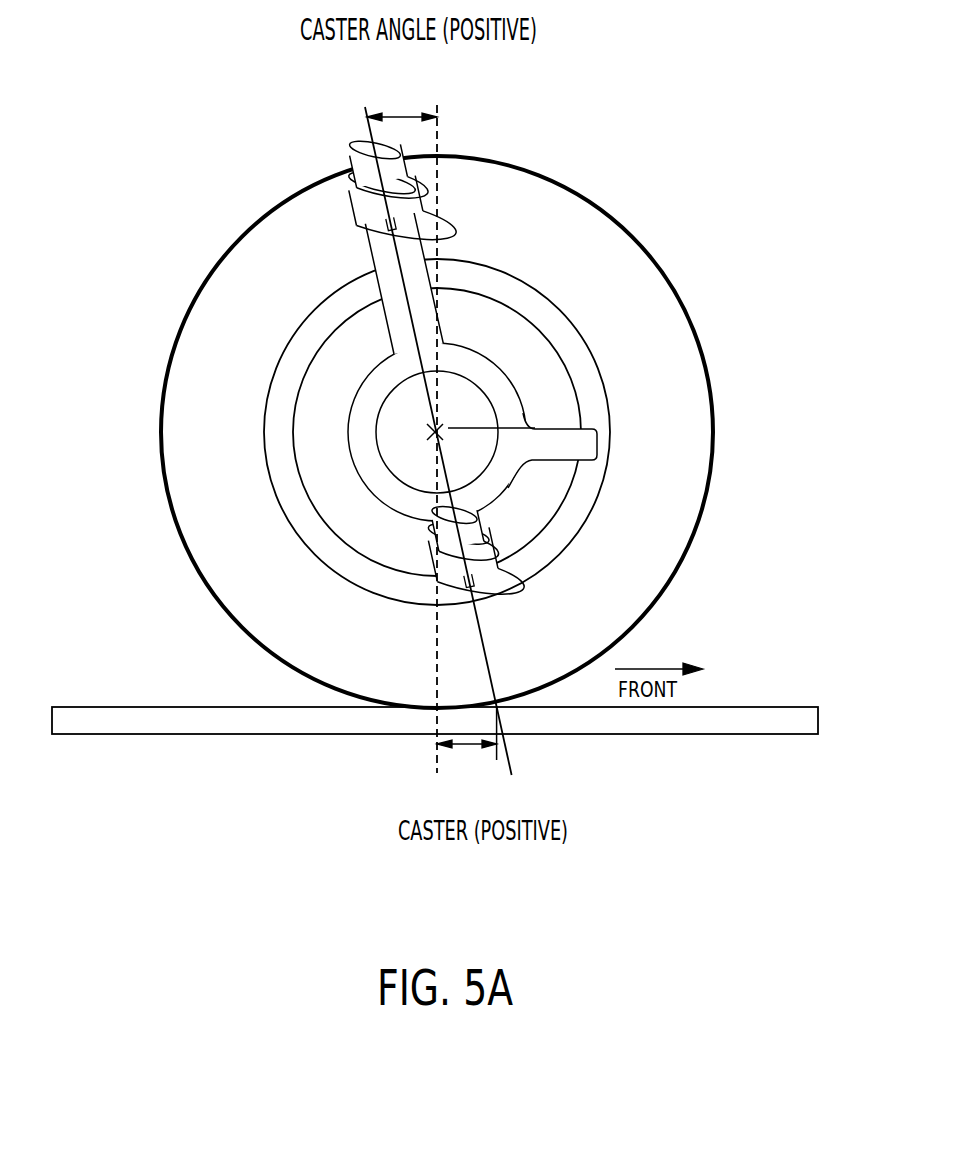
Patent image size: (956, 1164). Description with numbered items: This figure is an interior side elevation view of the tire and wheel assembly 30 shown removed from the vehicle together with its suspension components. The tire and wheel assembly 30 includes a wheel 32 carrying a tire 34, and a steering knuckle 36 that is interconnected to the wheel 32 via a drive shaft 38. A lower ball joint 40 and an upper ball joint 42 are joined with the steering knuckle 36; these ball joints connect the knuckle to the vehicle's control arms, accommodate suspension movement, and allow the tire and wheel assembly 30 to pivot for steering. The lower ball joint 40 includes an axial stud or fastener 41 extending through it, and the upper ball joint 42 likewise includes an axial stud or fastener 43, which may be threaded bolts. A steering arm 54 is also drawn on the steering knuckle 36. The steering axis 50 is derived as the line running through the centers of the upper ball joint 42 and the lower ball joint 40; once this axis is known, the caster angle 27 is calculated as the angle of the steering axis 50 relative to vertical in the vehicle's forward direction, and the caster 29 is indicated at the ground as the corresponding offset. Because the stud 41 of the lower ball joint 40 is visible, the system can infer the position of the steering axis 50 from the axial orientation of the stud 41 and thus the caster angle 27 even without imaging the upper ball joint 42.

The caster angle 27 is at (403, 115).
The caster 29 is at (467, 746).
The tire and wheel assembly 30 is at (143, 316).
The wheel 32 is at (538, 307).
The tire 34 is at (533, 223).
The steering knuckle 36 is at (505, 400).
The drive shaft 38 is at (413, 463).
The lower ball joint 40 is at (467, 532).
The axial stud or fastener 41 is at (497, 565).
The upper ball joint 42 is at (358, 163).
The axial stud or fastener 43 is at (357, 212).
The steering axis 50 is at (363, 270).
The steering arm 54 is at (523, 420).